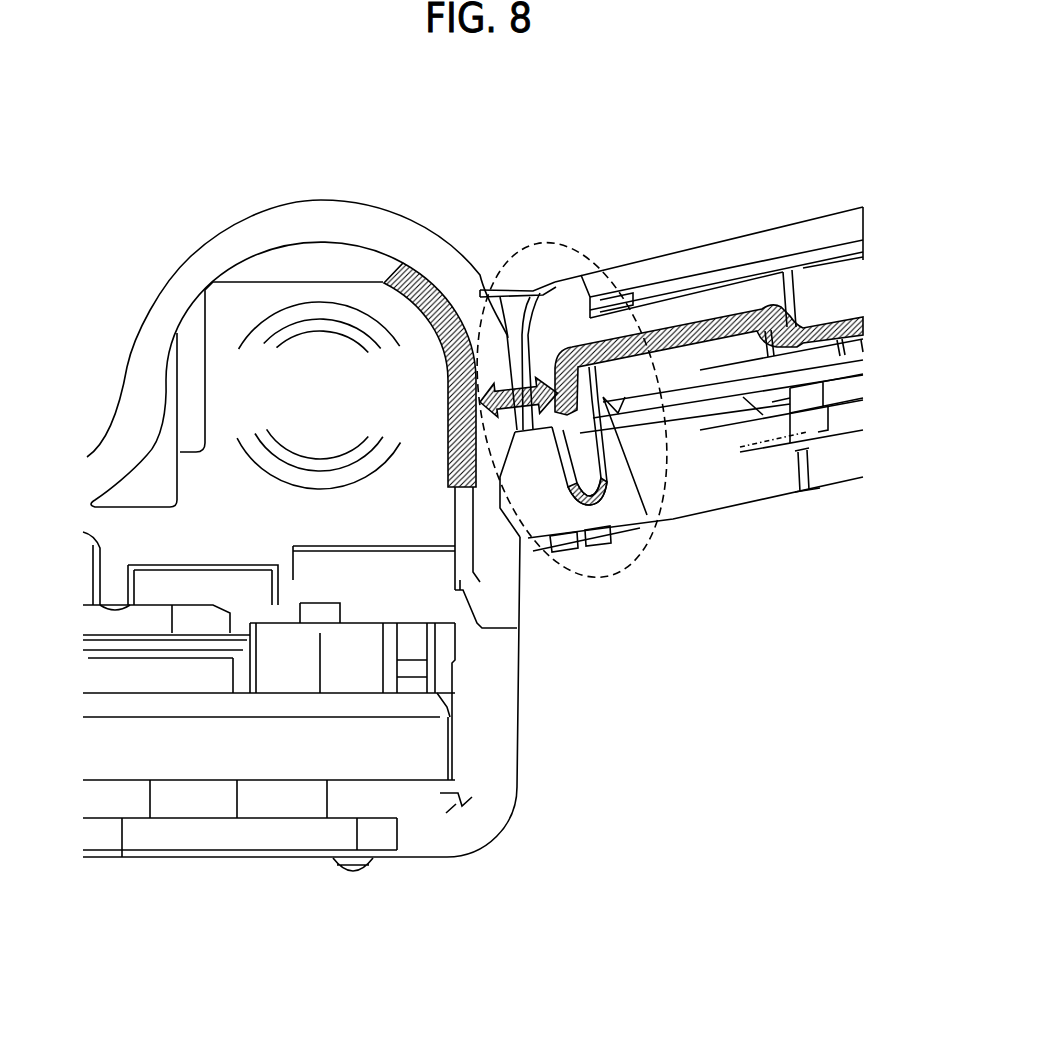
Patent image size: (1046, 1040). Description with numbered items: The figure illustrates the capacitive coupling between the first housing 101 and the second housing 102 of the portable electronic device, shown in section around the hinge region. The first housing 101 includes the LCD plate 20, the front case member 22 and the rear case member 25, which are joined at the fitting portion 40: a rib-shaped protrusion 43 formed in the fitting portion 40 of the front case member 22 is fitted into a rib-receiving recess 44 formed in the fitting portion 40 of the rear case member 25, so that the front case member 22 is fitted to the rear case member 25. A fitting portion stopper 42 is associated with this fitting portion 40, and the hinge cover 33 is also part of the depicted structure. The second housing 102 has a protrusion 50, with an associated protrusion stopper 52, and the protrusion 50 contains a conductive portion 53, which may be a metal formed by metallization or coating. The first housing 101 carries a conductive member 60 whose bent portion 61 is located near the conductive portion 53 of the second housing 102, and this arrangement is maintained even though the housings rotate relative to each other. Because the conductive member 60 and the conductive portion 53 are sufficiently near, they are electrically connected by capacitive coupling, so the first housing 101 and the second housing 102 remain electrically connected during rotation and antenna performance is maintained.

The LCD plate 20 is at (780, 240).
The front case member 22 is at (723, 297).
The rear case member 25 is at (843, 477).
The hinge cover 33 is at (748, 493).
The fitting portion 40 is at (520, 229).
The fitting portion stopper 42 is at (553, 540).
The protrusion 43 is at (620, 507).
The recess 44 is at (640, 525).
The protrusion 50 is at (319, 218).
The protrusion stopper 52 is at (507, 541).
The conductive portion 53 is at (400, 262).
The conductive member 60 is at (683, 328).
The bent portion 61 is at (555, 290).
The first housing 101 is at (853, 285).
The second housing 102 is at (457, 832).